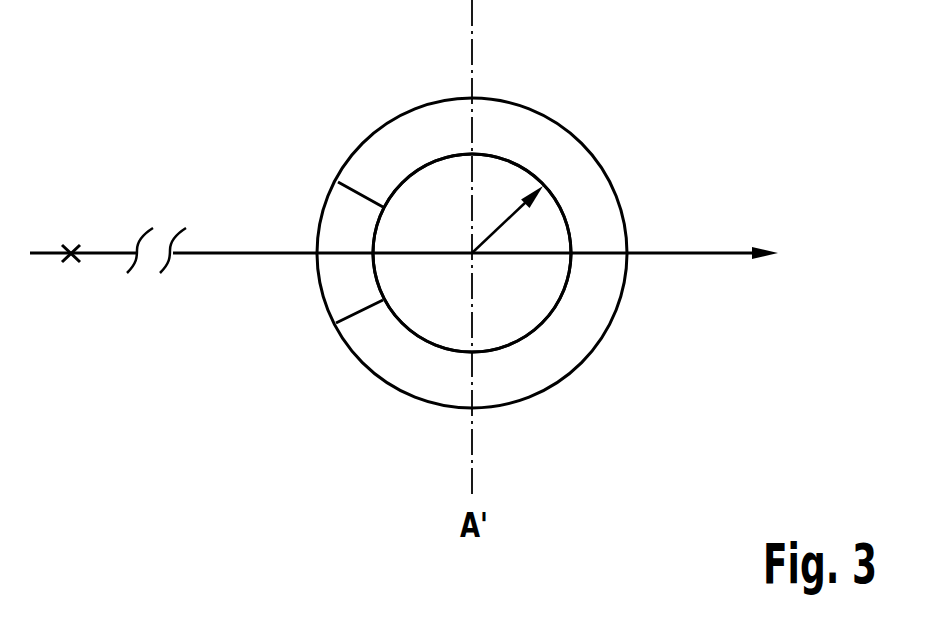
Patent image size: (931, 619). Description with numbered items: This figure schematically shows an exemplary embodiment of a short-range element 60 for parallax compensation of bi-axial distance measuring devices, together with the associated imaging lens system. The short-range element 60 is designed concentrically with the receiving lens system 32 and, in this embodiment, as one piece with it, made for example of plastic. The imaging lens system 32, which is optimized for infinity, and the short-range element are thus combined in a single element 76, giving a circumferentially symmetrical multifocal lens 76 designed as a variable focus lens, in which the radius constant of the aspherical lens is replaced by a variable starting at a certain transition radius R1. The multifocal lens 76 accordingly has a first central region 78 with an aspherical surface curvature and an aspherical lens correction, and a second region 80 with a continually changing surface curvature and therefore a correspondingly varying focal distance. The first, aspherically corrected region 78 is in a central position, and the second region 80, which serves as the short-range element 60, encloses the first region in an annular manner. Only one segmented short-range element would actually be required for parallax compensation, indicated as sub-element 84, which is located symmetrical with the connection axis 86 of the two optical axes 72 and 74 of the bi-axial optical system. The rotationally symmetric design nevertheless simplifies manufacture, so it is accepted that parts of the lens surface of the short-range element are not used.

The optical axis 72 is at (70, 212).
The optical axis 74 is at (492, 278).
The multifocal lens 76 is at (590, 112).
The short-range element 60 is at (593, 253).
The second region 80 is at (600, 225).
The receiving lens system 32 is at (399, 313).
The first central region 78 is at (428, 305).
The sub-element 84 is at (345, 288).
The connection axis 86 is at (740, 276).
The transition radius R1 is at (505, 227).